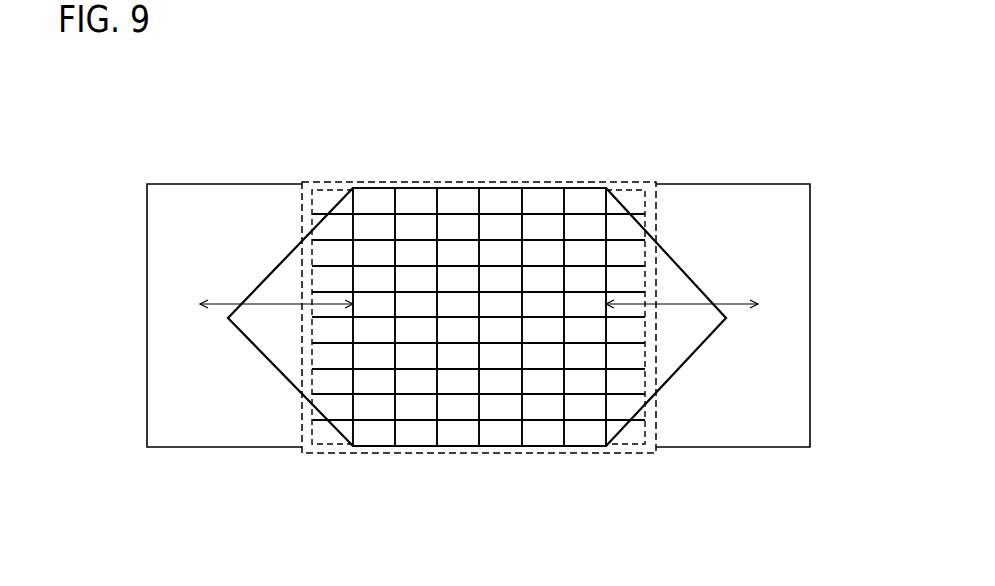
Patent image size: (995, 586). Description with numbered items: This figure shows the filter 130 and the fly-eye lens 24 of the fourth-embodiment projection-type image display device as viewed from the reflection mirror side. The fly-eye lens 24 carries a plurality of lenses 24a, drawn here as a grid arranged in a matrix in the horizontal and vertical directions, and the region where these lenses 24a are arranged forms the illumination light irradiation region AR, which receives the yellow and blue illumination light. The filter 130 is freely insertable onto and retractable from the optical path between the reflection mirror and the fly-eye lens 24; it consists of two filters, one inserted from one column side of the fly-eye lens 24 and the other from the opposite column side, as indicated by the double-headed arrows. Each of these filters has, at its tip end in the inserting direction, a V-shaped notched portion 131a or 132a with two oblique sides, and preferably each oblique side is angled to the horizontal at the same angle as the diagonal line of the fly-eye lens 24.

The filter 130 is at (203, 184).
The fly-eye lens 24 is at (572, 184).
The lenses 24a is at (328, 184).
The V-shaped notched portion 131a is at (272, 342).
The V-shaped notched portion 132a is at (690, 352).
The illumination light irradiation region AR is at (535, 452).